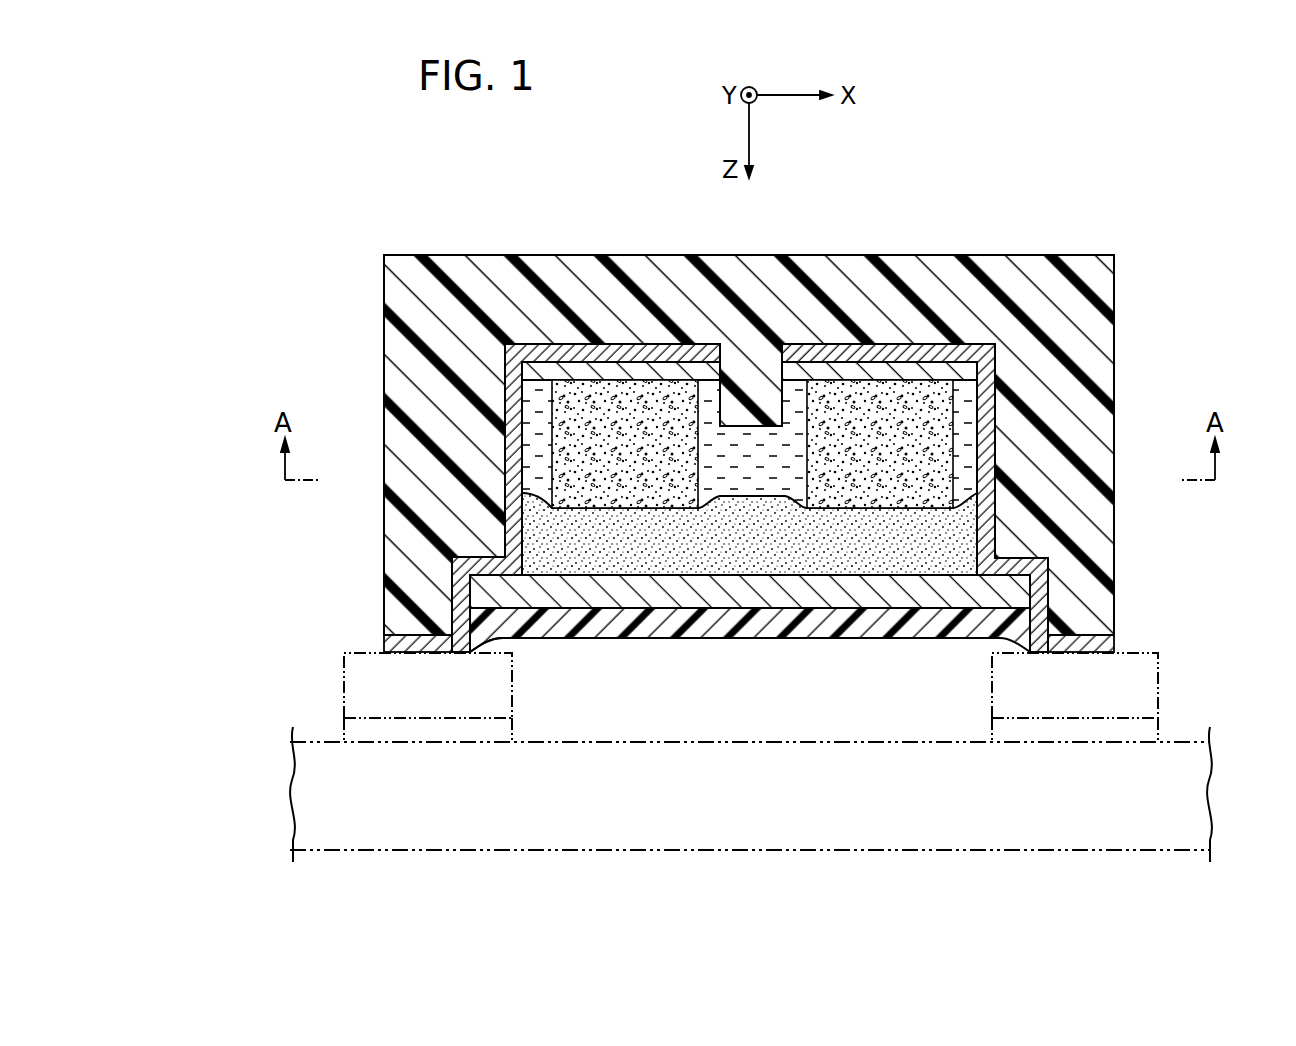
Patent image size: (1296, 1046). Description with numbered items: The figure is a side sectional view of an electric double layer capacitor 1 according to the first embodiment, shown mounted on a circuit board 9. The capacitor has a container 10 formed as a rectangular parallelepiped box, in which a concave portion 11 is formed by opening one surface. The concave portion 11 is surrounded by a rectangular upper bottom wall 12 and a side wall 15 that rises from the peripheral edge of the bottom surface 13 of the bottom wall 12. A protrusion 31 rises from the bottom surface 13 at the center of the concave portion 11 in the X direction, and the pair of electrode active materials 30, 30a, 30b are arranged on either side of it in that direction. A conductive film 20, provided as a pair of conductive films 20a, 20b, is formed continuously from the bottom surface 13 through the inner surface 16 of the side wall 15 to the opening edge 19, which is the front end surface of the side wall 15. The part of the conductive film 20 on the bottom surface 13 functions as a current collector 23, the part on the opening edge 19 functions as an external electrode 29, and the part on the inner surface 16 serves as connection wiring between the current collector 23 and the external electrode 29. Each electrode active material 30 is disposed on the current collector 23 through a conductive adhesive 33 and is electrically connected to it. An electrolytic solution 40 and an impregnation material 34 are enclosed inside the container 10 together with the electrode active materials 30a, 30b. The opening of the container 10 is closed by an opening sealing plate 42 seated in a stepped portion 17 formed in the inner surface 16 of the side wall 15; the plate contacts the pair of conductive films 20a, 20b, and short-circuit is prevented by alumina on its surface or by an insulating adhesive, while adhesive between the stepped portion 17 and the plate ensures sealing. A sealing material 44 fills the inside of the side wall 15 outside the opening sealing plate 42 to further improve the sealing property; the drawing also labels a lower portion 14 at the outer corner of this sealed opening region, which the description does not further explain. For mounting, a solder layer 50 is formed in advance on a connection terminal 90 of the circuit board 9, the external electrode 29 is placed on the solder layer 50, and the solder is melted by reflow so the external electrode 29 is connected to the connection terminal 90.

The electric double layer capacitor 1 is at (286, 132).
The circuit board 9 is at (885, 852).
The container 10 is at (380, 251).
The concave portion 11 is at (752, 452).
The upper bottom wall 12 is at (580, 256).
The bottom surface 13 is at (637, 362).
The lower surface of substrate 14 is at (467, 644).
The side wall 15 is at (392, 352).
The inner surface 16 is at (505, 420).
The stepped portion 17 is at (478, 607).
The opening edge 19 is at (403, 652).
The conductive film 20 is at (649, 451).
The conductive film 20a is at (490, 485).
The conductive film 20b is at (1010, 510).
The current collector 23 is at (865, 358).
The external electrode 29 is at (1082, 636).
The electrode active material 30 is at (625, 444).
The electrode active material 30a is at (665, 453).
The electrode active material 30b is at (910, 453).
The protrusion 31 is at (750, 392).
The conductive adhesive 33 is at (927, 378).
The impregnation material 34 is at (885, 566).
The electrolytic solution 40 is at (780, 483).
The opening sealing plate 42 is at (682, 596).
The sealing material 44 is at (615, 626).
The solder layer 50 is at (1160, 688).
The connection terminal 90 is at (1160, 734).